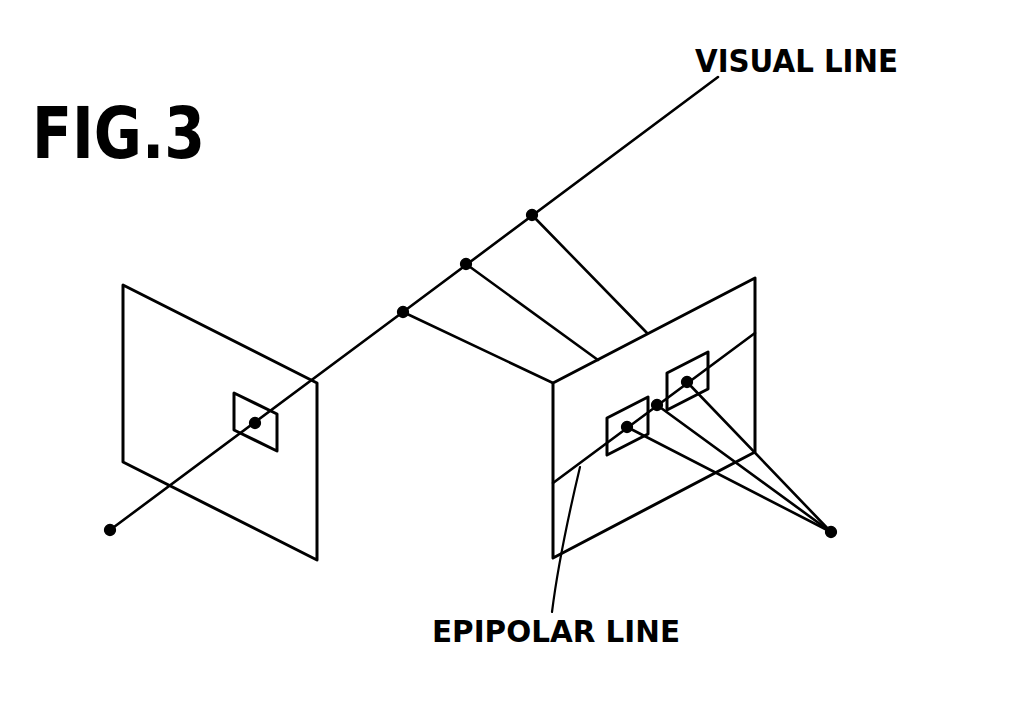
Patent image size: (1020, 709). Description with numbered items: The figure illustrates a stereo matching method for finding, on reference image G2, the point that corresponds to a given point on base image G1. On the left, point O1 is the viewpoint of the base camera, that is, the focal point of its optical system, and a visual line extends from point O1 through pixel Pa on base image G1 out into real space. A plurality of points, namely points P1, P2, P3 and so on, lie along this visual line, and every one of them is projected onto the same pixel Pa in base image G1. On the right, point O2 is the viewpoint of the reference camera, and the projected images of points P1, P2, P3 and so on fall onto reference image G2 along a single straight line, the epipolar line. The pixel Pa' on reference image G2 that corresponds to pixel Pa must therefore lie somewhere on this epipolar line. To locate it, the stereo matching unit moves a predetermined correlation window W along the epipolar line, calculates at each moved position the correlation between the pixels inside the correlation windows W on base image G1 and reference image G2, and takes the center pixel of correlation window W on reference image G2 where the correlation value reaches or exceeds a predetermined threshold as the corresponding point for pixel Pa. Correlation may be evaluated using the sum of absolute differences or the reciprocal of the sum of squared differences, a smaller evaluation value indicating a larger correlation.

The base image G1 is at (177, 311).
The reference image G2 is at (732, 289).
The pixel Pa is at (255, 359).
The pixel Pa' is at (654, 331).
The correlation window W is at (270, 406).
The point P1 is at (454, 331).
The point P2 is at (507, 297).
The point P3 is at (564, 260).
The point O1 is at (230, 438).
The point O2 is at (757, 474).